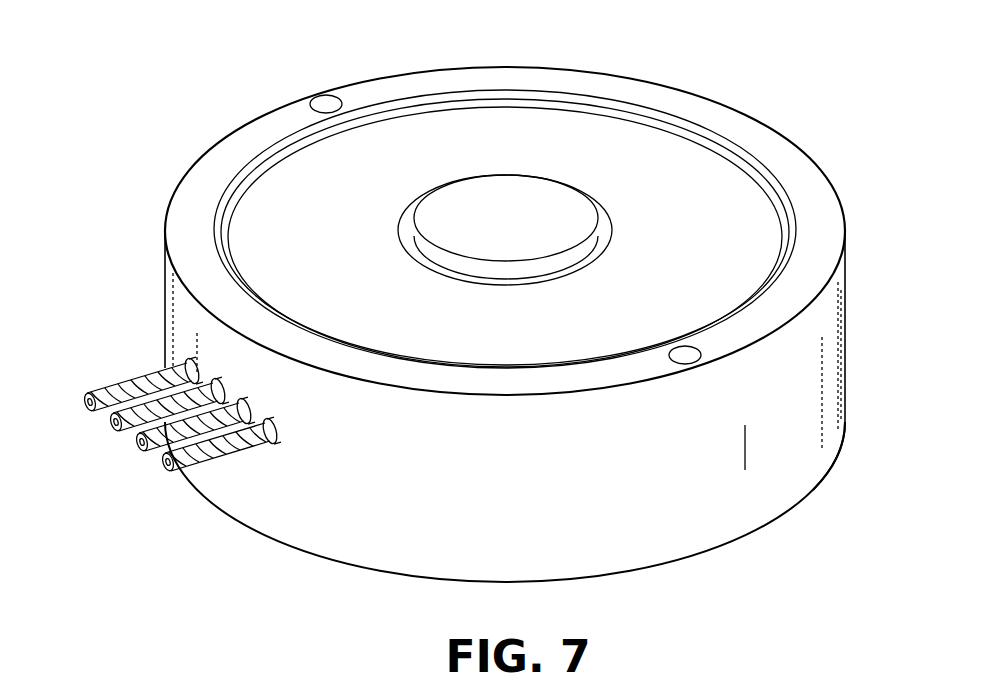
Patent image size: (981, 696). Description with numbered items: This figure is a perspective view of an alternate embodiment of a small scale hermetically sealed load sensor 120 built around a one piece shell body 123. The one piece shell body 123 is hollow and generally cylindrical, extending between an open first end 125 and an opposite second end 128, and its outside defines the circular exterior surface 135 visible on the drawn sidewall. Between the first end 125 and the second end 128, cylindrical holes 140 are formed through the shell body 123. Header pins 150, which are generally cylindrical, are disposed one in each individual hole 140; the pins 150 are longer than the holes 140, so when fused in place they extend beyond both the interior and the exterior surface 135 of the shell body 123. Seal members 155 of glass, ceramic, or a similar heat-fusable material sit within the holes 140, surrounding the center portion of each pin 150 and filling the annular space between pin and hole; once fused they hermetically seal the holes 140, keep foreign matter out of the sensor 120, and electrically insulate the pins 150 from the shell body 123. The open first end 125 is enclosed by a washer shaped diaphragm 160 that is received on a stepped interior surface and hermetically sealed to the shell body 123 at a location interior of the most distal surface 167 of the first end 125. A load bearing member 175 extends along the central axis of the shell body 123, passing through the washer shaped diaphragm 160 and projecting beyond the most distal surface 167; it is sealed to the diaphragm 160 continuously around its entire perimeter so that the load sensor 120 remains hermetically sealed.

The small scale hermetically sealed load sensor 120 is at (162, 118).
The one piece shell body 123 is at (692, 503).
The open first end 125 is at (846, 237).
The second end 128 is at (813, 489).
The exterior surface 135 is at (481, 474).
The cylindrical holes 140 is at (186, 364).
The header pins 150 is at (85, 402).
The seal members 155 is at (183, 370).
The washer shaped diaphragm 160 is at (708, 173).
The most distal surface 167 is at (823, 265).
The load bearing member 175 is at (497, 213).